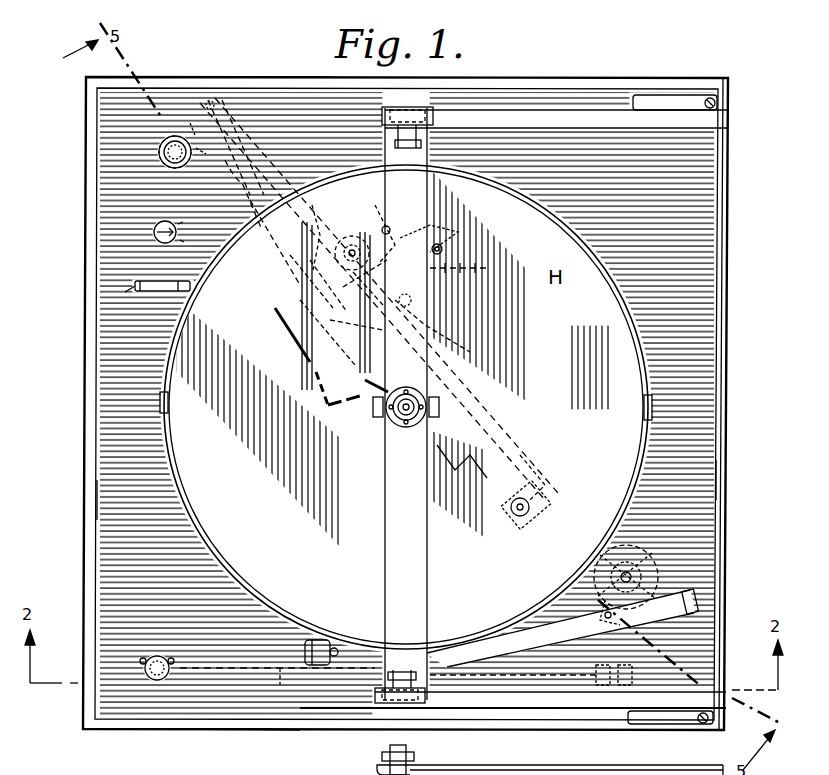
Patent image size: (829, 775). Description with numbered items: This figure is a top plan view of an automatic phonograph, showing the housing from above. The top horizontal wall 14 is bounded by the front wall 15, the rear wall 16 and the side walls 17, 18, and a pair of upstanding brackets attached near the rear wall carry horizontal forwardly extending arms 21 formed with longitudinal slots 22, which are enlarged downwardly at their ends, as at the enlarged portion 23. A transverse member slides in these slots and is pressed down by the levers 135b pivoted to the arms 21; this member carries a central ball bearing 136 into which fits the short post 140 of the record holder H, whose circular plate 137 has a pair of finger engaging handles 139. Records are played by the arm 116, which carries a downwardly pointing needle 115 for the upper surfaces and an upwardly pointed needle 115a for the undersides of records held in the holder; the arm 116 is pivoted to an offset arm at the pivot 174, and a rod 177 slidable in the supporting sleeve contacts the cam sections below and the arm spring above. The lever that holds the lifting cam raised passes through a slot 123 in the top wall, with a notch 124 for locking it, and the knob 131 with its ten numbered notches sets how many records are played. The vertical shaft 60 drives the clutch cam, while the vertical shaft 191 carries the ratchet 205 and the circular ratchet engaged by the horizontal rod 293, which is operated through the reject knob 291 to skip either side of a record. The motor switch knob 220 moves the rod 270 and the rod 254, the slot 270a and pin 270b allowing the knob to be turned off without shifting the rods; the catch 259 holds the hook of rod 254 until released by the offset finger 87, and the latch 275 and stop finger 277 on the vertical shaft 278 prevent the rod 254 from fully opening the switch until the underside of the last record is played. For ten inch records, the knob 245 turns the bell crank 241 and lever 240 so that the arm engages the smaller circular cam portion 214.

The top horizontal wall 14 is at (708, 420).
The front wall 15 is at (95, 495).
The rear wall 16 is at (720, 480).
The side wall 17 is at (272, 77).
The side wall 18 is at (213, 731).
The horizontal forwardly extending arms 21 is at (572, 120).
The longitudinal slots 22 is at (612, 768).
The enlarged slot portion 23 is at (698, 774).
The vertical shaft 60 is at (660, 535).
The offset finger 87 is at (348, 272).
The needle 115 is at (308, 652).
The upwardly pointed needle 115a is at (334, 648).
The arm 116 is at (560, 628).
The slot 123 is at (150, 292).
The notch 124 is at (130, 290).
The knob 131 is at (153, 235).
The levers 135b is at (418, 135).
The central ball bearing 136 is at (397, 428).
The circular plate 137 is at (598, 300).
The finger engaging handles 139 is at (383, 420).
The central post 140 is at (408, 430).
The pivot 174 is at (698, 600).
The rod 177 is at (685, 555).
The vertical shaft 191 is at (528, 470).
The ratchet 205 is at (520, 518).
The circular cam portion 214 is at (277, 686).
The knob 220 is at (163, 166).
The lever 240 is at (662, 645).
The bell crank 241 is at (628, 680).
The knob 245 is at (157, 681).
The rod 254 is at (488, 405).
The catch 259 is at (425, 300).
The rod 270 is at (286, 320).
The longitudinal slot 270a is at (204, 90).
The pin 270b is at (260, 235).
The latch 275 is at (375, 225).
The stop finger 277 is at (475, 268).
The vertical shaft 278 is at (440, 247).
The reject knob 291 is at (158, 152).
The horizontal rod 293 is at (296, 212).